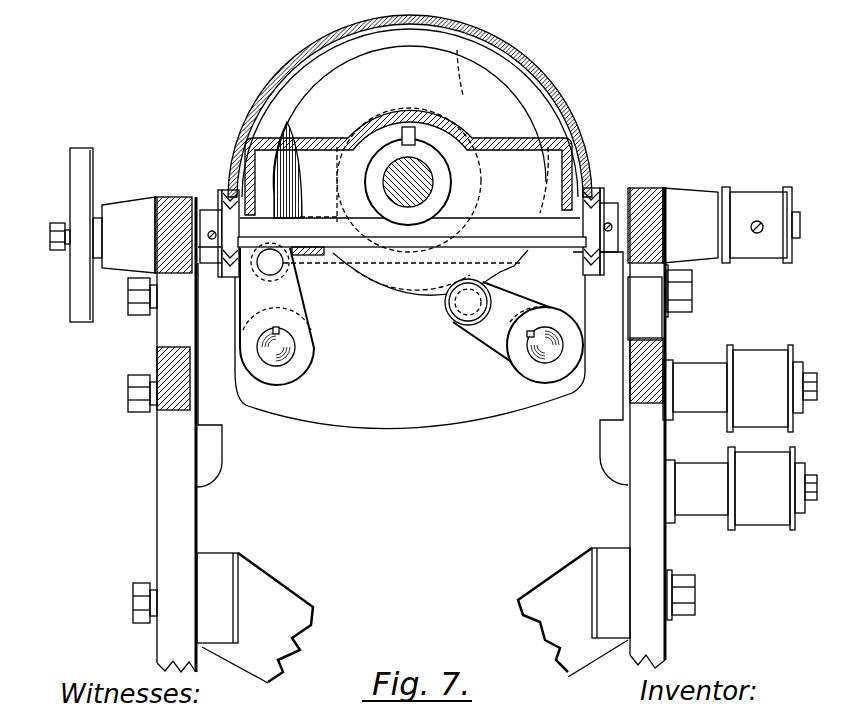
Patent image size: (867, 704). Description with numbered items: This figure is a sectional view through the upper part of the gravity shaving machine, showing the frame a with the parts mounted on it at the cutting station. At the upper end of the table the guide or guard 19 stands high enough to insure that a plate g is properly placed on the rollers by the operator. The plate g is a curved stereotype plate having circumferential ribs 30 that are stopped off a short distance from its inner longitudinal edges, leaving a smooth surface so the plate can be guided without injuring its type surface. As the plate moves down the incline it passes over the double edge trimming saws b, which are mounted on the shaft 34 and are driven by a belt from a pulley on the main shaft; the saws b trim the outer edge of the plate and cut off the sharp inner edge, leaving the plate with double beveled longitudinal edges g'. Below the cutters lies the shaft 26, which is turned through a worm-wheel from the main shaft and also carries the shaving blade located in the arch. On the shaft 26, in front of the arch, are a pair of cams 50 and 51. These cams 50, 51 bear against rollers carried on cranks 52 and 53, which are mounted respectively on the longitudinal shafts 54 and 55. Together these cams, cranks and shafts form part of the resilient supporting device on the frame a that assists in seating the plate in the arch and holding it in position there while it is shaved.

The plate g is at (410, 106).
The double beveled longitudinal edges g' is at (412, 201).
The double edge trimming saws b is at (222, 210).
The guide or guard 19 is at (573, 126).
The circumferential ribs 30 is at (357, 32).
The shaft 26 is at (433, 182).
The shaft 34 is at (567, 232).
The cam 50 is at (313, 257).
The cam 51 is at (417, 288).
The crank 52 is at (293, 302).
The crank 53 is at (483, 335).
The longitudinal shaft 54 is at (289, 358).
The longitudinal shaft 55 is at (540, 358).
The frame a is at (172, 476).